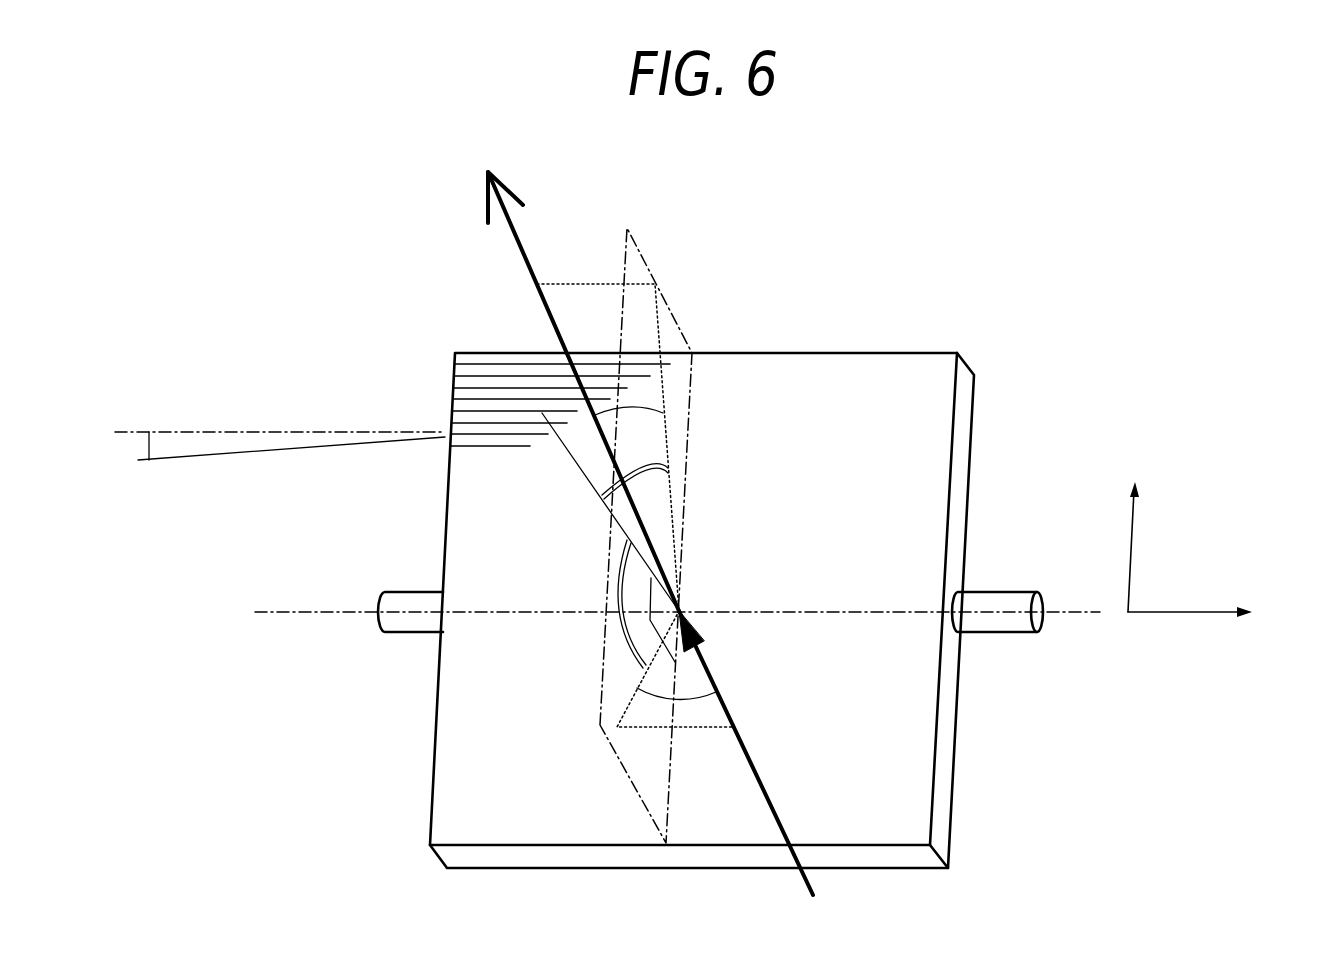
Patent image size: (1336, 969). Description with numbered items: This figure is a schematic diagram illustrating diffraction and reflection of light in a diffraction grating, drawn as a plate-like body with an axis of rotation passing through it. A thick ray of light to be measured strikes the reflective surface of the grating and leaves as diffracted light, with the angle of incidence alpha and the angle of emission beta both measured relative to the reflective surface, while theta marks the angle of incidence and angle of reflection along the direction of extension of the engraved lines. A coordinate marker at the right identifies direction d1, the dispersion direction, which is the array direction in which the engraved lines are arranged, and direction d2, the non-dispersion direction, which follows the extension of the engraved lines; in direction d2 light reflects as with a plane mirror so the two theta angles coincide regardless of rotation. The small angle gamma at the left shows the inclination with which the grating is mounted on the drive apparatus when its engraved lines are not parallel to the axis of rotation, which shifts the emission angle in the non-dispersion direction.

The dispersion direction d1 is at (1139, 527).
The non-dispersion direction d2 is at (1212, 612).